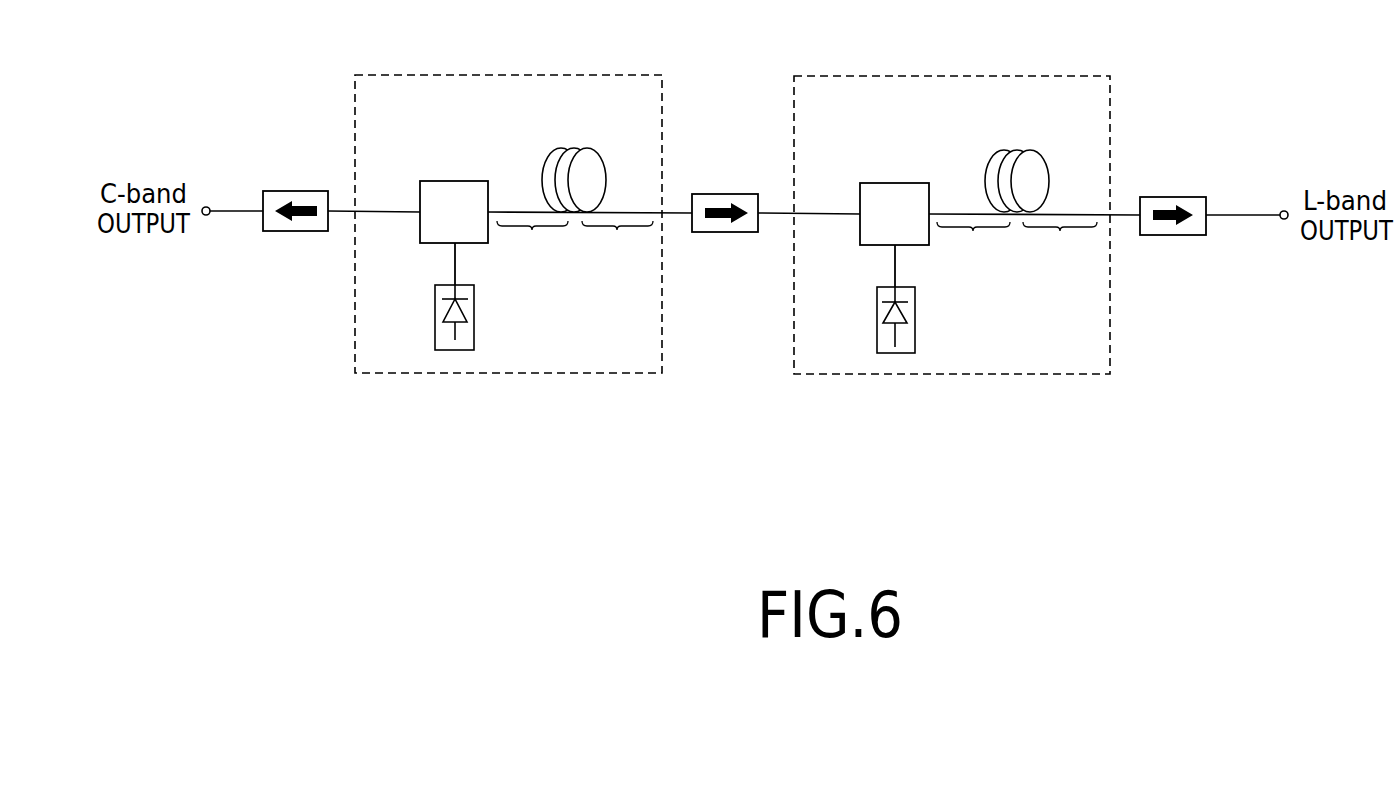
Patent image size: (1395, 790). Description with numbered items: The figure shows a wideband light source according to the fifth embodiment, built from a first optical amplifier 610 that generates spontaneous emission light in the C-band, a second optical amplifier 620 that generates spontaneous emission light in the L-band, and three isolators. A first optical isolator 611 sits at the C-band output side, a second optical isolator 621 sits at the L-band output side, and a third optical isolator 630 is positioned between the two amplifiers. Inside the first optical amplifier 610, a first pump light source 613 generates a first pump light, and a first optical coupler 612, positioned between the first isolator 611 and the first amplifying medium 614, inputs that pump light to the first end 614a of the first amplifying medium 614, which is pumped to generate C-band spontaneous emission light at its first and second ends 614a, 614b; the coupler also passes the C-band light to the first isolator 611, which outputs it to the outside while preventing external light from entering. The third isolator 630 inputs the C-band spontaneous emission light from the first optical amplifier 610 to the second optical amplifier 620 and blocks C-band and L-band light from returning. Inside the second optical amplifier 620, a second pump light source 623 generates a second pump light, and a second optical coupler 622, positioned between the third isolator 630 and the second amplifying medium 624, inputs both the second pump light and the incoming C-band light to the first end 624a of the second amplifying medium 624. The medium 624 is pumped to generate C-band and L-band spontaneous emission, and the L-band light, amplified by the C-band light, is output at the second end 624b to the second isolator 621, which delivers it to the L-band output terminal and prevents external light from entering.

The first optical amplifier 610 is at (440, 74).
The first optical isolator 611 is at (300, 190).
The first optical coupler 612 is at (452, 180).
The first pump light source 613 is at (435, 320).
The first amplifying medium 614 is at (643, 264).
The first end of the first amplifying medium 614a is at (532, 241).
The second end of the first amplifying medium 614b is at (617, 241).
The second optical amplifier 620 is at (1004, 74).
The second optical isolator 621 is at (1170, 196).
The second optical coupler 622 is at (893, 182).
The second pump light source 623 is at (877, 322).
The second amplifying medium 624 is at (1087, 264).
The first end of the second amplifying medium 624a is at (973, 243).
The second end of the second amplifying medium 624b is at (1060, 243).
The third optical isolator 630 is at (725, 193).